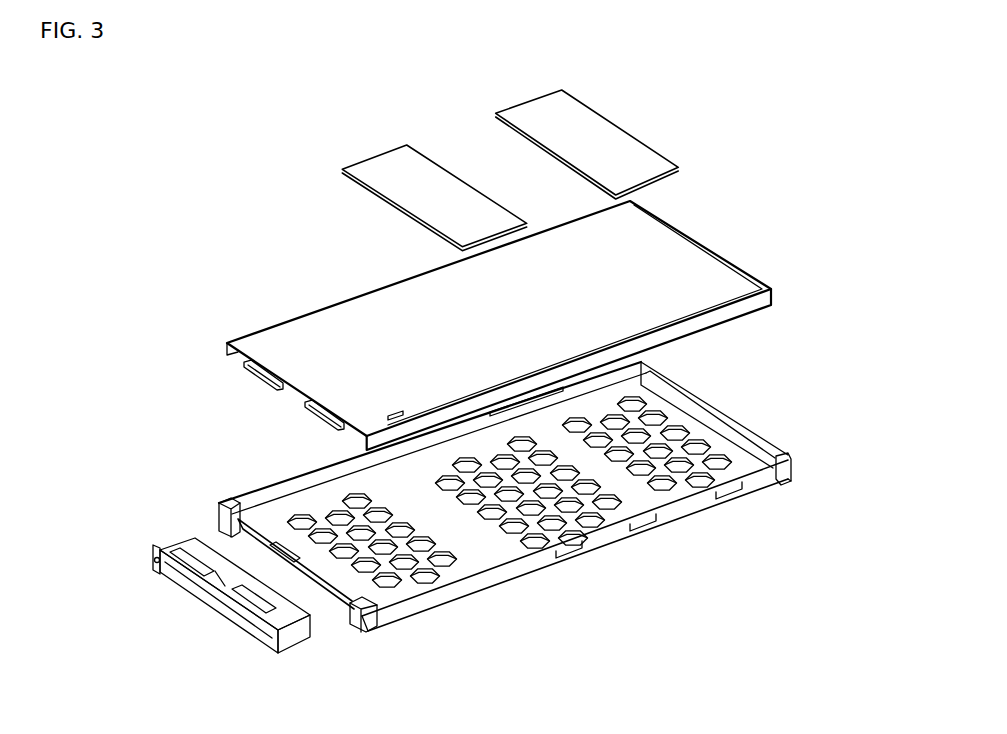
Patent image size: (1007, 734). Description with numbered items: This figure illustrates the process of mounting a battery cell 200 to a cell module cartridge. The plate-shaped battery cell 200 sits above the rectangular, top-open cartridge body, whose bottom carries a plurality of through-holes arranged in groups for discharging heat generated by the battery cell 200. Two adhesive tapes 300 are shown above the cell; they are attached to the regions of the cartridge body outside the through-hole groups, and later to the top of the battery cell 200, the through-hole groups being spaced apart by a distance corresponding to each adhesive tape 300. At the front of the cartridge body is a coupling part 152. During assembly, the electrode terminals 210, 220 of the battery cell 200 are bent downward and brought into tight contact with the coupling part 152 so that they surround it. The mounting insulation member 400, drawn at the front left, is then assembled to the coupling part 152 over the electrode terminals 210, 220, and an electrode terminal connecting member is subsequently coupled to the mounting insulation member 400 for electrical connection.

The coupling part 152 is at (331, 595).
The battery cell 200 is at (695, 278).
The electrode terminal 210 is at (248, 371).
The electrode terminal 220 is at (320, 416).
The adhesive tape 300 is at (612, 136).
The mounting insulation member 400 is at (152, 547).